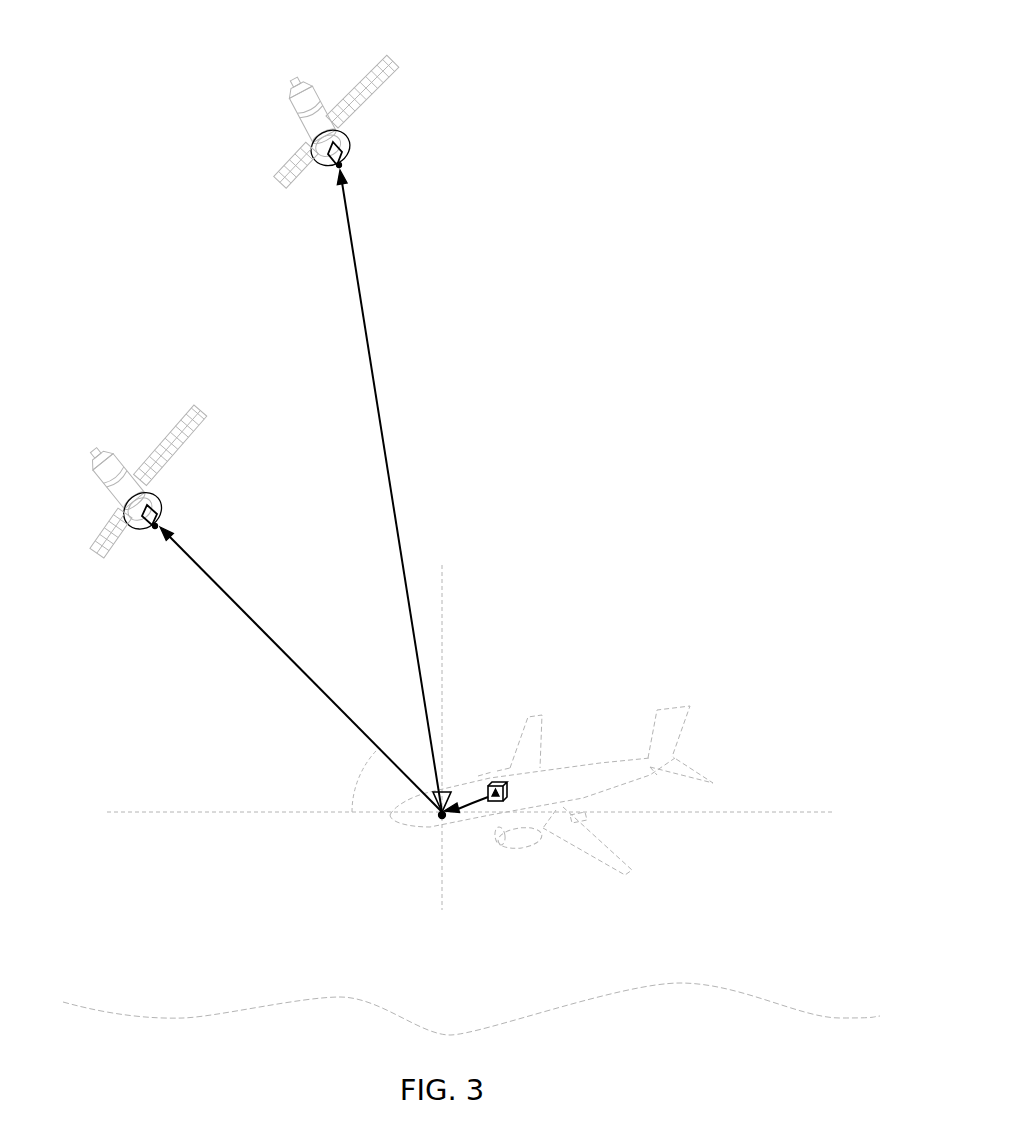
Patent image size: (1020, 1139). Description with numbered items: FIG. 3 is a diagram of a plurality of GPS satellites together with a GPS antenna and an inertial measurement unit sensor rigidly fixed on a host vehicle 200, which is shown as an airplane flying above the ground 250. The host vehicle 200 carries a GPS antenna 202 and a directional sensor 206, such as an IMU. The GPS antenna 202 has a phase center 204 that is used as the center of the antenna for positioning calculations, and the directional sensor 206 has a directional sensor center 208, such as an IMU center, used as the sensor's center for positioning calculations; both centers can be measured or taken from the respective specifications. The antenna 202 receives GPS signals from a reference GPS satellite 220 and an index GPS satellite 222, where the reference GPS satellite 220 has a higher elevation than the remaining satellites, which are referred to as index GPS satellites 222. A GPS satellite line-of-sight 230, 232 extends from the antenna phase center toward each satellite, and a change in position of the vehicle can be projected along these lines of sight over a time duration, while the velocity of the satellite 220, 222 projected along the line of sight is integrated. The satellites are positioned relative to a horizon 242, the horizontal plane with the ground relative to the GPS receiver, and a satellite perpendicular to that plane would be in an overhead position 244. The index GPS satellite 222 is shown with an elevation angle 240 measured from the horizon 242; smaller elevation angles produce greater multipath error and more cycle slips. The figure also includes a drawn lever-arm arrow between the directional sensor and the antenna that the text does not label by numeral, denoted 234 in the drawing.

The host vehicle 200 is at (578, 762).
The GPS antenna 202 is at (443, 792).
The phase center 204 is at (441, 817).
The directional sensor 206 is at (489, 786).
The directional sensor center 208 is at (507, 795).
The reference GPS satellite 220 is at (297, 82).
The index GPS satellite 222 is at (96, 452).
The GPS satellite line-of-sight 230 is at (363, 323).
The GPS satellite line-of-sight 232 is at (235, 600).
The lever arm vector 234 is at (466, 817).
The elevation angle 240 is at (363, 771).
The horizon 242 is at (213, 812).
The overhead position 244 is at (443, 594).
The ground 250 is at (793, 1013).